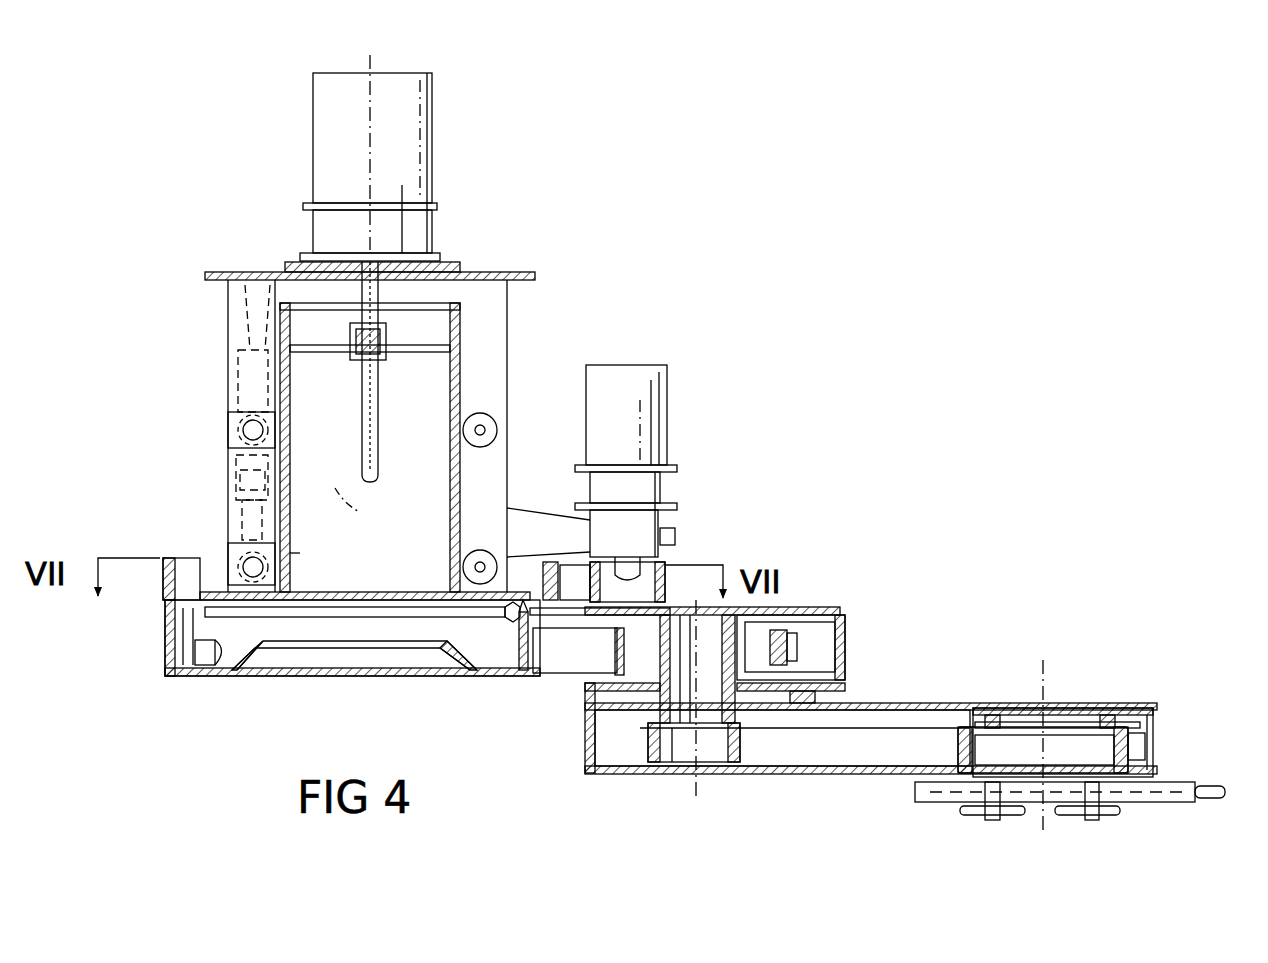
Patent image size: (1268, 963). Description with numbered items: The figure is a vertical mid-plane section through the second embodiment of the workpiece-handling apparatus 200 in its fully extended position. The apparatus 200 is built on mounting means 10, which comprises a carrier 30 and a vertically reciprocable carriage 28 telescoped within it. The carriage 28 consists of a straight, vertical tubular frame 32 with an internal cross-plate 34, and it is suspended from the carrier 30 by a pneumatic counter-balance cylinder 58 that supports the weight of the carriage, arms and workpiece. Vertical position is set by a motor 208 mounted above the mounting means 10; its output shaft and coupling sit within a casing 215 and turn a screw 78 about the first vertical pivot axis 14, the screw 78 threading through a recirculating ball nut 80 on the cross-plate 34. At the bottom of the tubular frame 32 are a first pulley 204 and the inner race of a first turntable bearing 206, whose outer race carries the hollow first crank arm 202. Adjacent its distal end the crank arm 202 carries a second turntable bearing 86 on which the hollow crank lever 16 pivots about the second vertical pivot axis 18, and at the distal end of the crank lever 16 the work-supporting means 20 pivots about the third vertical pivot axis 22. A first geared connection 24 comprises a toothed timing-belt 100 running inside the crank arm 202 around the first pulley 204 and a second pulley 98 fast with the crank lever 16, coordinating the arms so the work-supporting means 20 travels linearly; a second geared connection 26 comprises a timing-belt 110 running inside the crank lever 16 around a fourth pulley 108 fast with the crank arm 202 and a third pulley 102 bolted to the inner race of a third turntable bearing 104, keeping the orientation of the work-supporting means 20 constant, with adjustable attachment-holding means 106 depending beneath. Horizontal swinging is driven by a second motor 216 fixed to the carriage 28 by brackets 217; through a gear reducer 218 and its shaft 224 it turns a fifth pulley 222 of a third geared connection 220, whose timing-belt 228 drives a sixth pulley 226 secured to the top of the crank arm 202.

The mounting means 10 is at (515, 272).
The first vertical pivot axis 14 is at (339, 484).
The crank lever 16 is at (878, 705).
The second vertical pivot axis 18 is at (693, 775).
The work-supporting means 20 is at (1112, 820).
The third vertical pivot axis 22 is at (1024, 730).
The first geared connection 24 is at (545, 655).
The second geared connection 26 is at (845, 767).
The carriage 28 is at (292, 553).
The carrier 30 is at (222, 363).
The tubular frame 32 is at (440, 563).
The cross-plate 34 is at (420, 352).
The pneumatic counter-balance cylinder 58 is at (240, 478).
The screw 78 is at (378, 438).
The recirculating ball nut 80 is at (386, 332).
The second slewing or turntable bearing 86 is at (825, 690).
The second pulley 98 is at (790, 640).
The toothed timing-belt 100 is at (578, 650).
The third pulley 102 is at (1145, 745).
The third slewing or turntable bearing 104 is at (1115, 712).
The adjustable attachment-holding means 106 is at (940, 803).
The fourth pulley 108 is at (650, 770).
The toothed timing-belt 110 is at (765, 740).
The apparatus 200 is at (787, 505).
The first crank arm 202 is at (808, 605).
The first pulley 204 is at (220, 656).
The first slewing or turntable bearing 206 is at (165, 603).
The motor 208 is at (415, 122).
The casing 215 is at (412, 229).
The second motor 216 is at (648, 400).
The brackets 217 is at (507, 515).
The gear reducer 218 is at (650, 520).
The third geared connection 220 is at (207, 553).
The fifth pulley 222 is at (668, 568).
The shaft 224 is at (628, 562).
The sixth pulley 226 is at (165, 592).
The timing-belt 228 is at (157, 578).